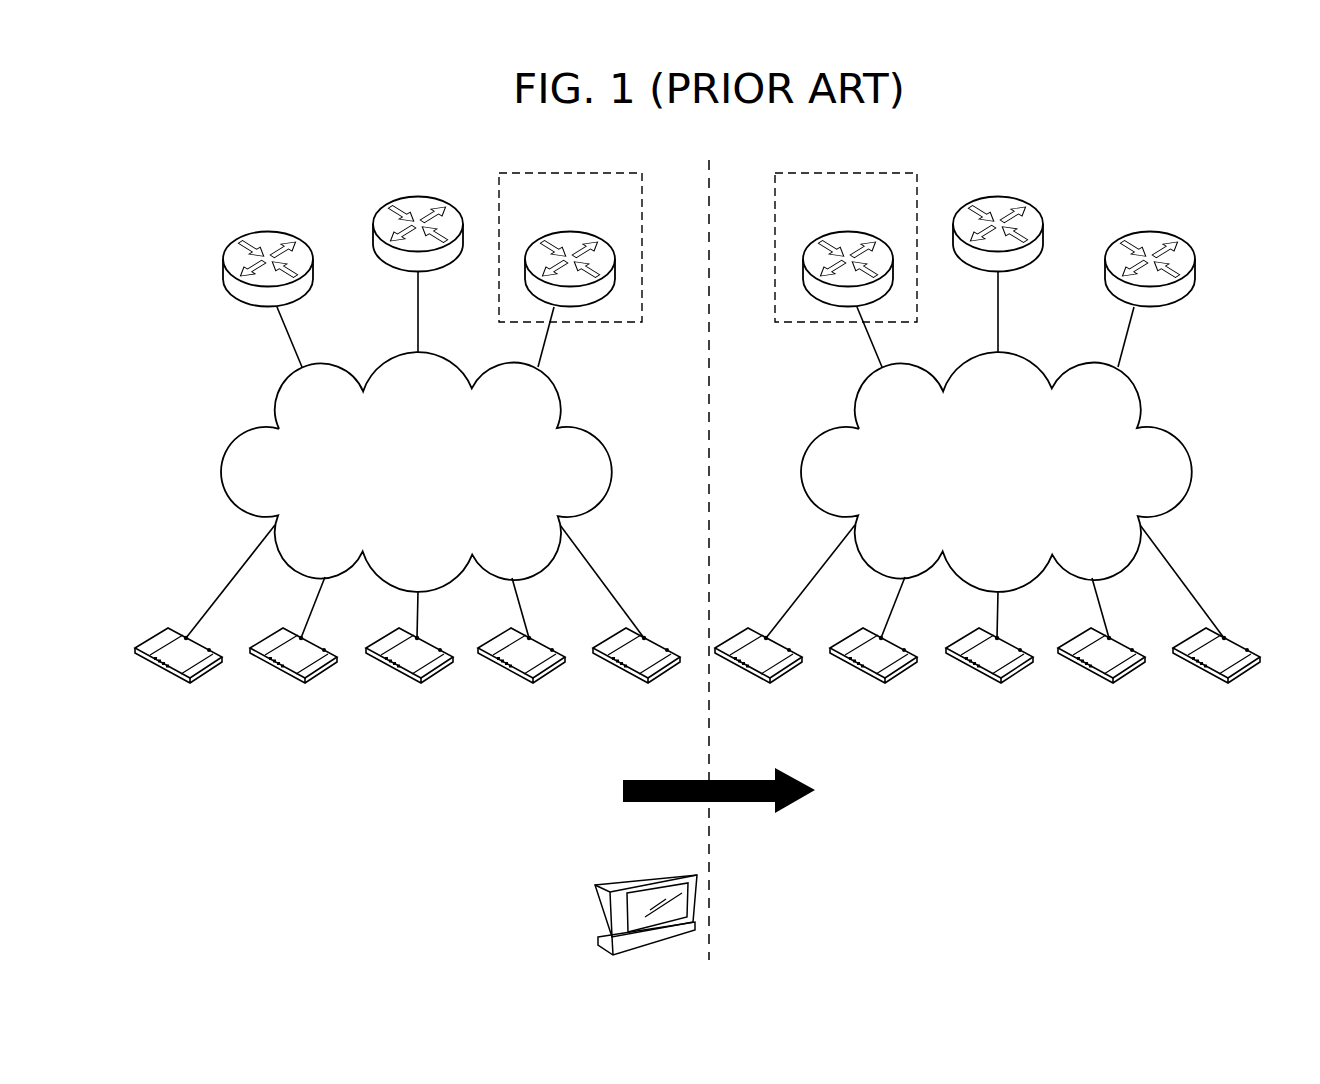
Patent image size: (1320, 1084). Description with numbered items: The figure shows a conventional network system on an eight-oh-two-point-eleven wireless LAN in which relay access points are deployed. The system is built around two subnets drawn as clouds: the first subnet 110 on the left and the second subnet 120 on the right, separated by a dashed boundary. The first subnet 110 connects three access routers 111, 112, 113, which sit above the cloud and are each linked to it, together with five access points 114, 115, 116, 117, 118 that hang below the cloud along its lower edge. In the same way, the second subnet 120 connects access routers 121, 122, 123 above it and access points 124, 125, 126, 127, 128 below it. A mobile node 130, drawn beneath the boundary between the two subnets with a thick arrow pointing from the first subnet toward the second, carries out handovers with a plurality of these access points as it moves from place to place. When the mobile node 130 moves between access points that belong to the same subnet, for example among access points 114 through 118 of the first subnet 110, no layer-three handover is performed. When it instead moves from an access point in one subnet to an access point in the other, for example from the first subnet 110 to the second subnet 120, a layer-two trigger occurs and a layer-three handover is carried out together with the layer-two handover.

The subnet 1 110 is at (611, 469).
The subnet 2 120 is at (1191, 469).
The access router 111 is at (265, 277).
The access router 112 is at (415, 252).
The access router 113 is at (570, 270).
The access router 121 is at (846, 270).
The access router 122 is at (995, 252).
The access router 123 is at (1147, 277).
The access point 114 is at (205, 642).
The access point 115 is at (293, 668).
The access point 116 is at (409, 676).
The access point 117 is at (525, 669).
The access point 118 is at (621, 642).
The access point 124 is at (785, 642).
The access point 125 is at (873, 668).
The access point 126 is at (989, 676).
The access point 127 is at (1105, 669).
The access point 128 is at (1201, 642).
The mobile node 130 is at (646, 893).